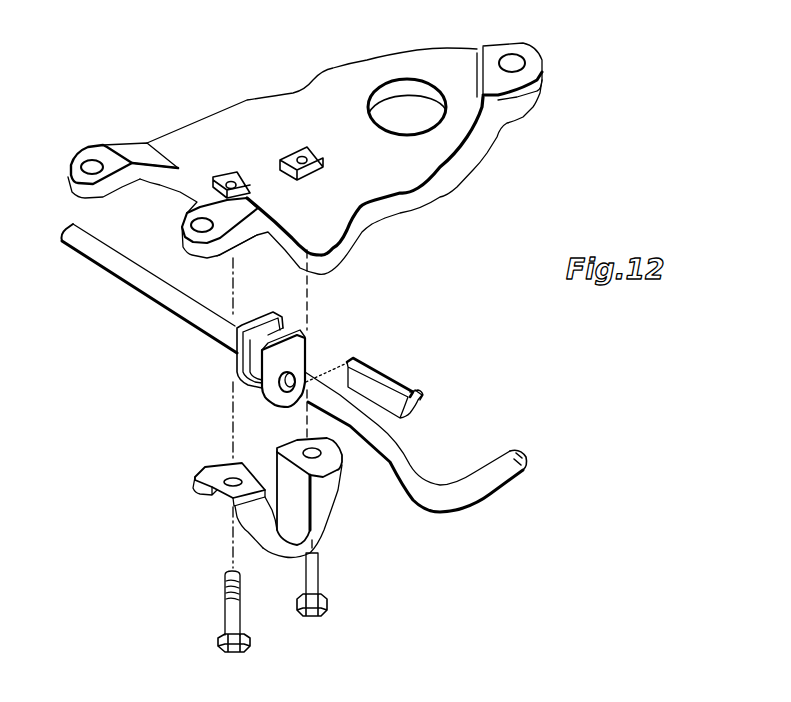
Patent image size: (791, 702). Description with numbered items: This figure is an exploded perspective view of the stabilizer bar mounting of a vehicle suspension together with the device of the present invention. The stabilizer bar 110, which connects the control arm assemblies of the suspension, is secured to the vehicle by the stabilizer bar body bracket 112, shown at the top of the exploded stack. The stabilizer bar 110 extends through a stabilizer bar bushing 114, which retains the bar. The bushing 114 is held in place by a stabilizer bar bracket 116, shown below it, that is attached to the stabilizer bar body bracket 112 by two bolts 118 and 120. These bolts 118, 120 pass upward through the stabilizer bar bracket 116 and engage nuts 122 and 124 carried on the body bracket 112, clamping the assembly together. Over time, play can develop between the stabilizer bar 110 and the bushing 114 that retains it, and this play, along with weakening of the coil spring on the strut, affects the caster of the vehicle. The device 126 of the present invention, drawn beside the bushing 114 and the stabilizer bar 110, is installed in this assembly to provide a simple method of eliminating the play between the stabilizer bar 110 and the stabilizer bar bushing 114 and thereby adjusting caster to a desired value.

The stabilizer bar 110 is at (160, 293).
The stabilizer bar body bracket 112 is at (242, 108).
The stabilizer bar bushing 114 is at (270, 327).
The stabilizer bar bracket 116 is at (318, 508).
The bolt 118 is at (230, 653).
The bolt 120 is at (311, 617).
The nut 122 is at (190, 133).
The nut 124 is at (287, 153).
The device 126 is at (365, 360).